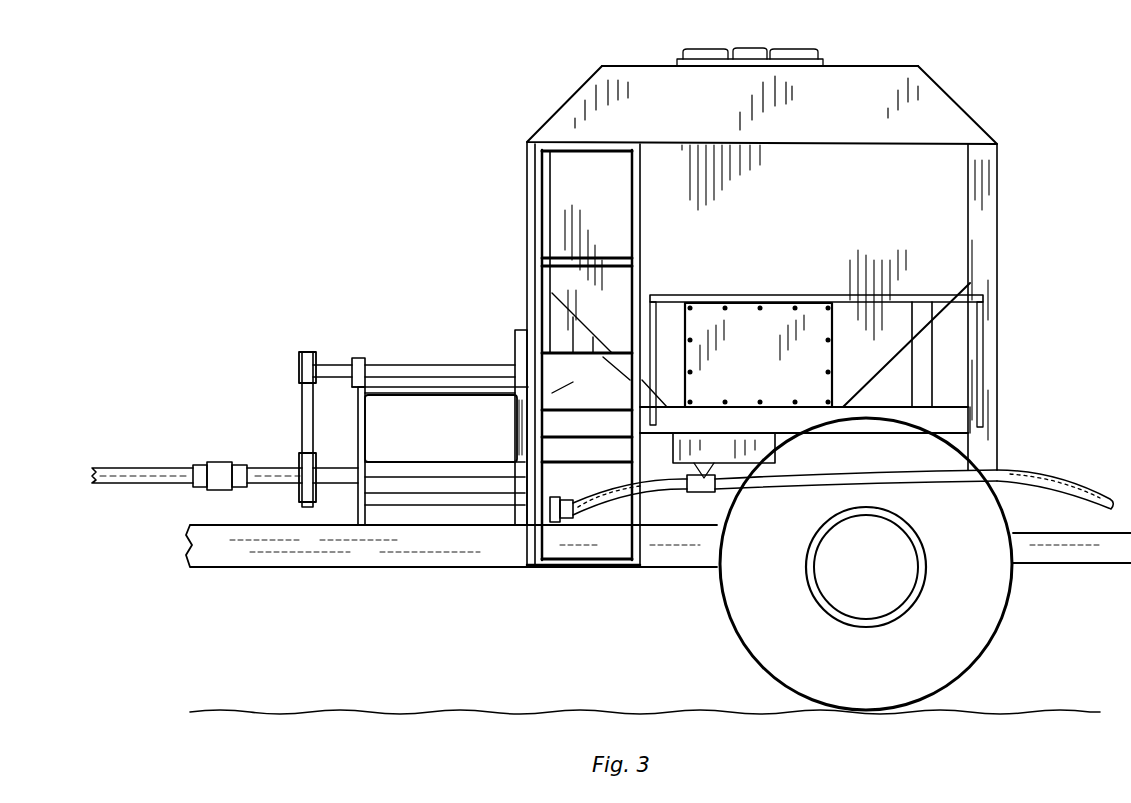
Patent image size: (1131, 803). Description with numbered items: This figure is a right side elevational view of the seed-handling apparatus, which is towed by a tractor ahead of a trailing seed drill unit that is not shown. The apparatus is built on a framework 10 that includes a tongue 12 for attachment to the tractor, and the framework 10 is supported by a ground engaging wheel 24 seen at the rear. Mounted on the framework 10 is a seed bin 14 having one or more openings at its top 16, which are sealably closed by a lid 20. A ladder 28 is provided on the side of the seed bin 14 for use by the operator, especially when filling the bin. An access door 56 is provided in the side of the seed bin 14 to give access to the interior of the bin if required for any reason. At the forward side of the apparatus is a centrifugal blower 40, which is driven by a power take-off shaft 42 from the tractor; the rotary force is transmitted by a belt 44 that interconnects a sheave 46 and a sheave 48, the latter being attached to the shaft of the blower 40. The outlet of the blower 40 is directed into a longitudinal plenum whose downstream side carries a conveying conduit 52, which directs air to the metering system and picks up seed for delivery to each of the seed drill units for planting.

The framework 10 is at (530, 232).
The tongue 12 is at (252, 567).
The seed bin 14 is at (553, 114).
The top 16 is at (657, 66).
The lid 20 is at (756, 48).
The ground engaging wheel 24 is at (1015, 598).
The ladder 28 is at (540, 171).
The blower 40 is at (520, 330).
The power take-off shaft 42 is at (145, 469).
The belt 44 is at (303, 392).
The sheave 46 is at (302, 456).
The sheave 48 is at (315, 355).
The conveying conduit 52 is at (603, 503).
The access door 56 is at (768, 388).